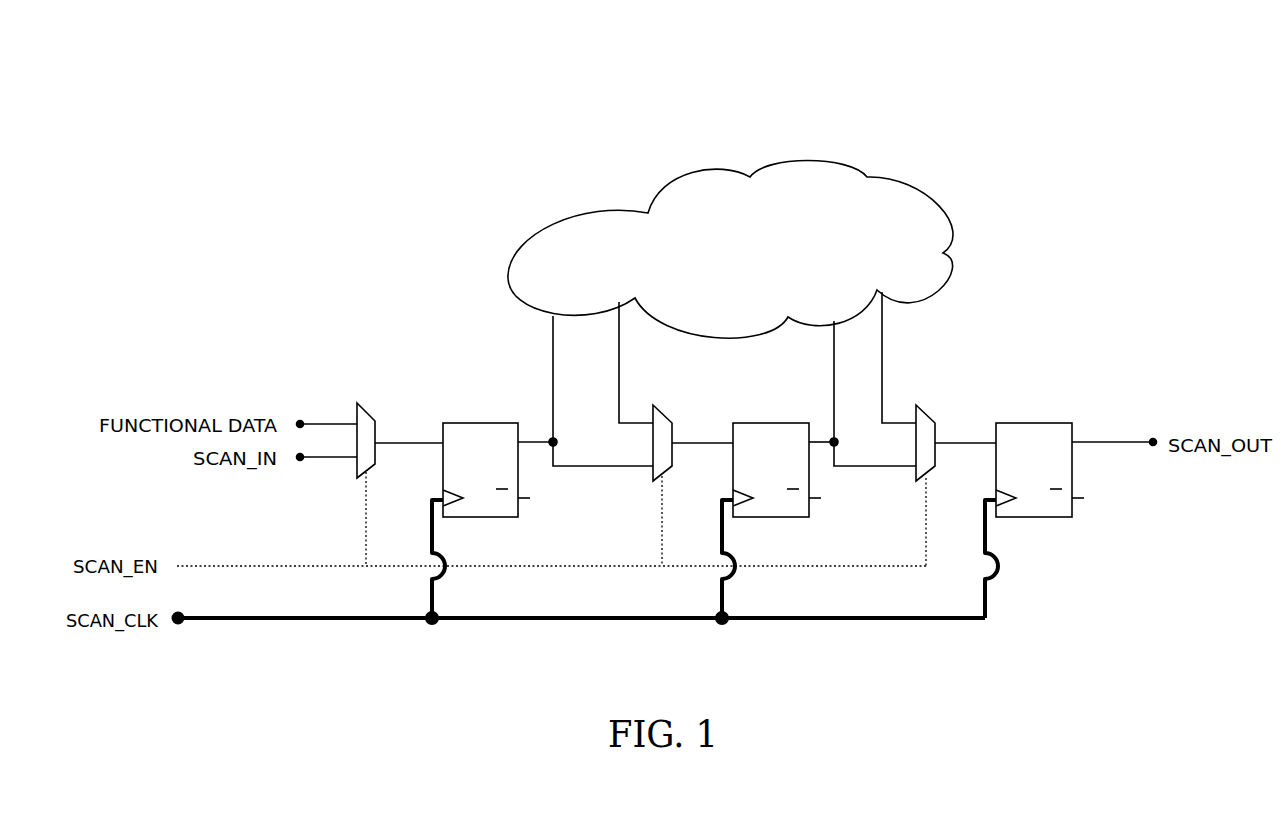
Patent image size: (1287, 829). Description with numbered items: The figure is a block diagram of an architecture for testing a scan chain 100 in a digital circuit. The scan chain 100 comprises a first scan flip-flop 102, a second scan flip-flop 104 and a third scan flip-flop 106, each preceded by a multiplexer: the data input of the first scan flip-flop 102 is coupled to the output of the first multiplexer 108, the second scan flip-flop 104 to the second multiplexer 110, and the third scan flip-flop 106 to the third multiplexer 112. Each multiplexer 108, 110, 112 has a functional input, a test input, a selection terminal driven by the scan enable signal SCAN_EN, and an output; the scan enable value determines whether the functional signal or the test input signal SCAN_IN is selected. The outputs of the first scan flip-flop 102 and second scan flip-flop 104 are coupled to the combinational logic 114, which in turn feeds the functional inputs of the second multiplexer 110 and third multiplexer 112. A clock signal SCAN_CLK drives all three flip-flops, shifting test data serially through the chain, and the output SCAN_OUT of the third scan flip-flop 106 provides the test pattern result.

The scan chain 100 is at (1036, 80).
The first scan flip-flop 102 is at (485, 422).
The second scan flip-flop 104 is at (757, 422).
The third scan flip-flop 106 is at (1040, 422).
The first multiplexer 108 is at (368, 406).
The second multiplexer 110 is at (663, 408).
The third multiplexer 112 is at (925, 408).
The combinational logic 114 is at (510, 266).